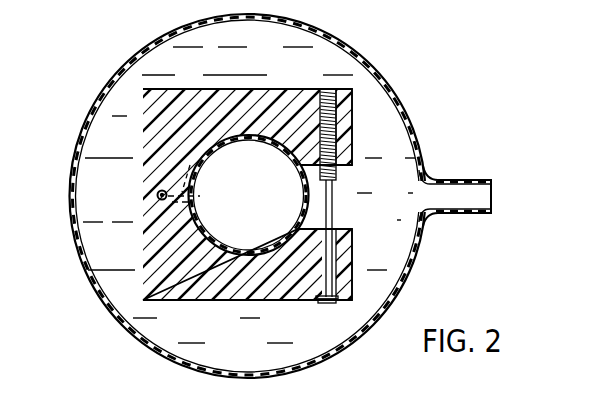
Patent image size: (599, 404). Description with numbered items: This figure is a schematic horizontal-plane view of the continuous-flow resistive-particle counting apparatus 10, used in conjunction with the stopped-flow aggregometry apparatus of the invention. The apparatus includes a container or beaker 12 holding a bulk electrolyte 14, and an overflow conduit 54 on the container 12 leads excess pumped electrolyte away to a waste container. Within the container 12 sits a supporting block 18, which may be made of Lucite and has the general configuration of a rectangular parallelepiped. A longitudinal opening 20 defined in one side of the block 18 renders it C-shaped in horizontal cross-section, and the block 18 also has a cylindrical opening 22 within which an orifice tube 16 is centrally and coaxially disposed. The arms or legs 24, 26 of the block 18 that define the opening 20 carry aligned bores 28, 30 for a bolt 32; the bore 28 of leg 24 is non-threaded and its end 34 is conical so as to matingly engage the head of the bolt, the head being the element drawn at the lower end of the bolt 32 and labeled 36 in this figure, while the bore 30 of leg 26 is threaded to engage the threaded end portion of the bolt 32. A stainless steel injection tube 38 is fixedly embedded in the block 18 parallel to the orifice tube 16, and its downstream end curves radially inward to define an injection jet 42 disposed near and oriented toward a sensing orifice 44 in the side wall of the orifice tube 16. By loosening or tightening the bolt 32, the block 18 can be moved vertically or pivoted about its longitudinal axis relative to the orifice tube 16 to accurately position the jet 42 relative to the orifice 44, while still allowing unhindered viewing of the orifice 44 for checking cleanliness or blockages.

The continuous-flow resistive-particle counting apparatus 10 is at (80, 263).
The container 12 is at (128, 328).
The bulk electrolyte 14 is at (118, 288).
The orifice tube 16 is at (258, 138).
The supporting block 18 is at (214, 290).
The longitudinal opening 20 is at (343, 206).
The cylindrical opening 22 is at (222, 250).
The leg 24 is at (347, 252).
The leg 26 is at (347, 123).
The bore 28 is at (320, 262).
The bore 30 is at (322, 96).
The bolt 32 is at (337, 172).
The end of bore 34 is at (318, 301).
The nut 36 is at (335, 304).
The injection tube 38 is at (157, 194).
The injection jet 42 is at (190, 165).
The sensing orifice 44 is at (200, 195).
The overflow conduit 54 is at (462, 180).